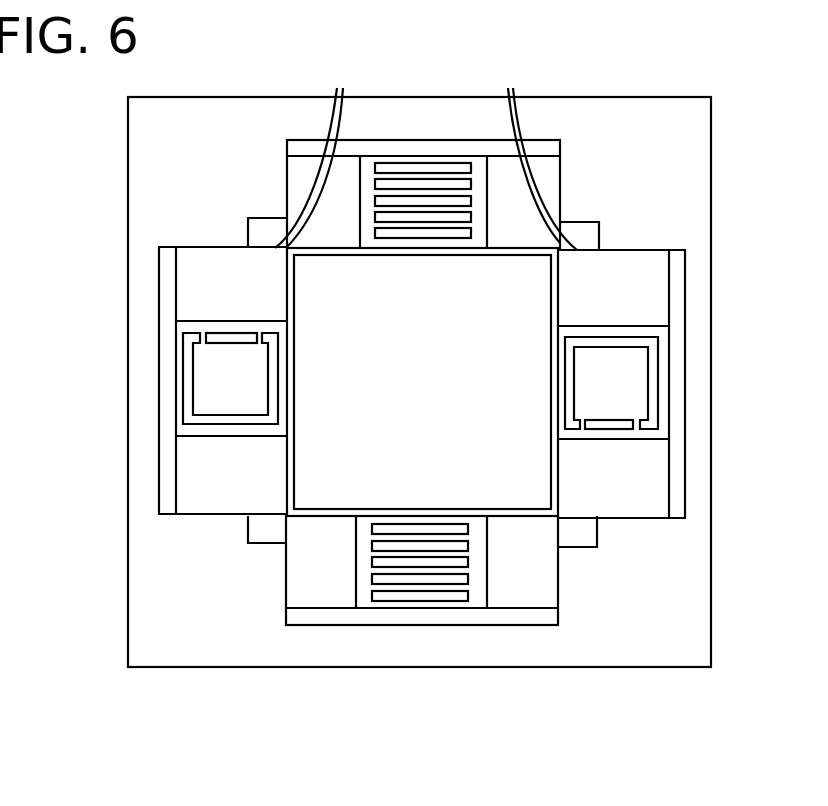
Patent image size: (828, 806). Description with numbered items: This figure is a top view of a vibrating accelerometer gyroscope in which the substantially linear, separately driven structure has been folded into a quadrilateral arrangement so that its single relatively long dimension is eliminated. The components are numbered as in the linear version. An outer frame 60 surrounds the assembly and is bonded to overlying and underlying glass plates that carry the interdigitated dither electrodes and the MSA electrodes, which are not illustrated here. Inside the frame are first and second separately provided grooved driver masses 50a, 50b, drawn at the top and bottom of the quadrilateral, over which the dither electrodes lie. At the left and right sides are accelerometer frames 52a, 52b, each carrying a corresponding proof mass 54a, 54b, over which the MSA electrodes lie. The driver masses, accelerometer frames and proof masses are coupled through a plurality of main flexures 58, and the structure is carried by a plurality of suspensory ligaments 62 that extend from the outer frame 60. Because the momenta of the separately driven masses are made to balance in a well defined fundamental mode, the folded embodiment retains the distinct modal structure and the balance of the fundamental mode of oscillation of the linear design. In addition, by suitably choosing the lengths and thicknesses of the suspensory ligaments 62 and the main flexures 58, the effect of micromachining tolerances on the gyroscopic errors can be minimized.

The outer frame 60 is at (128, 155).
The suspensory ligaments 62 is at (426, 153).
The main flexures 58 is at (297, 258).
The grooved driver mass 50a is at (442, 257).
The grooved driver mass 50b is at (400, 509).
The accelerometer frame 52a is at (227, 437).
The accelerometer frame 52b is at (620, 440).
The proof mass 54a is at (193, 394).
The proof mass 54b is at (648, 401).